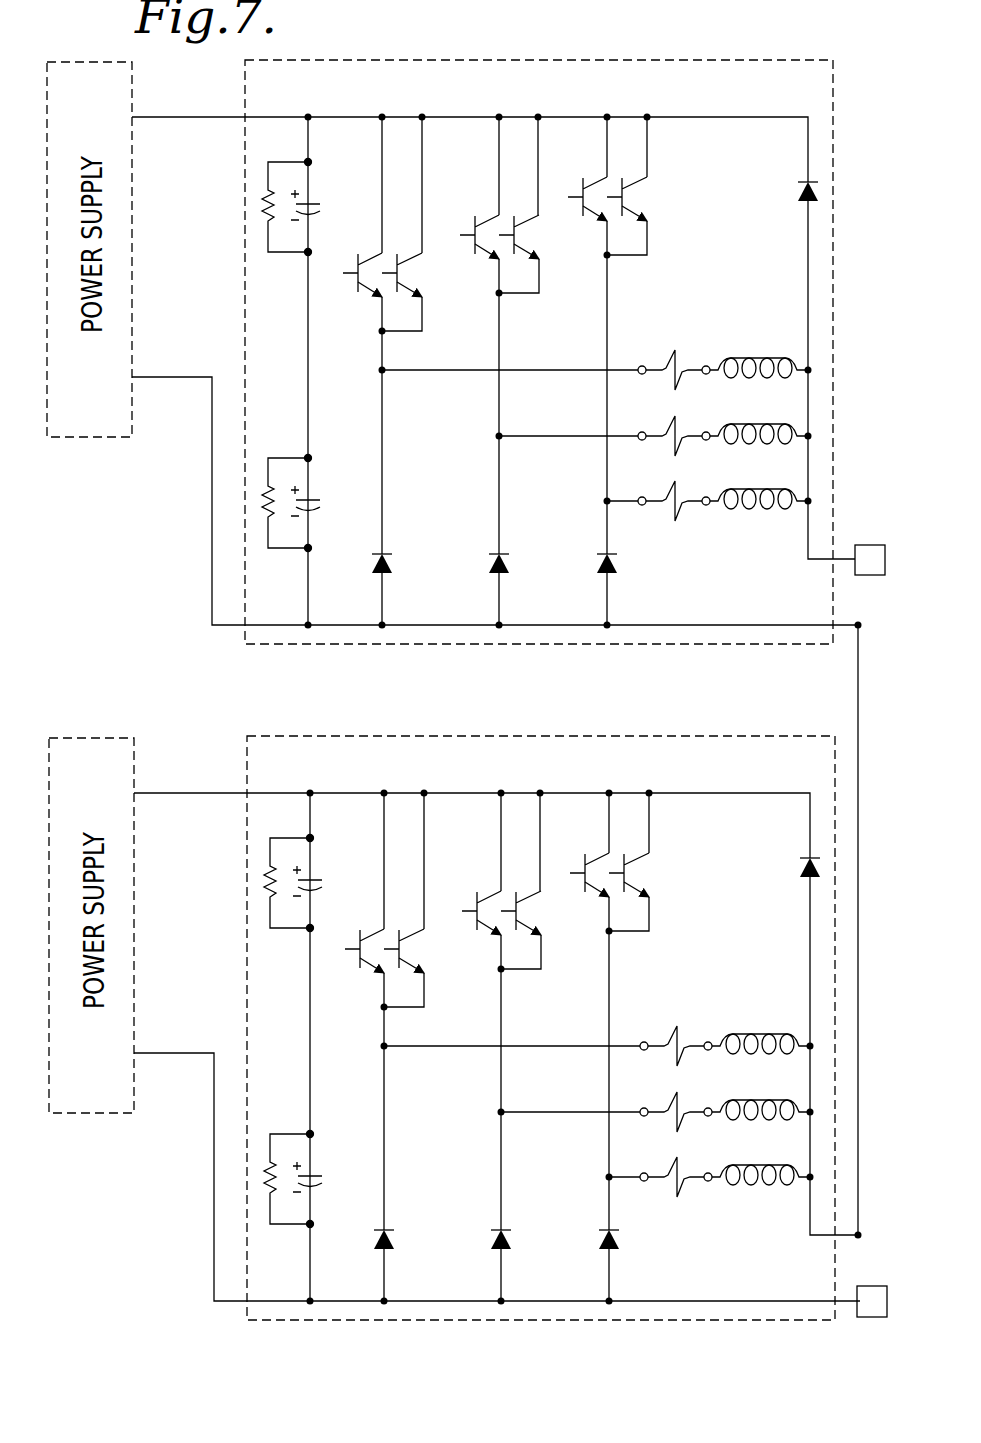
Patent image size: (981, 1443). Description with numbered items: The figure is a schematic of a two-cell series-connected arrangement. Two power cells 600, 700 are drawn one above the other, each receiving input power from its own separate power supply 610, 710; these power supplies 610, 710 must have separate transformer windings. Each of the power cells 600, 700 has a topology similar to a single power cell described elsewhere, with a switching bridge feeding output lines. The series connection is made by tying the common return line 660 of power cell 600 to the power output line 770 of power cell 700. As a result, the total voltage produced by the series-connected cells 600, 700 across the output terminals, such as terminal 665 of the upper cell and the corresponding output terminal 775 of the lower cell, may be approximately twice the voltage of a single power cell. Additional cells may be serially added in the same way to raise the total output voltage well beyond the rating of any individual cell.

The power cell 600 is at (605, 58).
The power supply 610 is at (95, 437).
The common return line 660 is at (858, 625).
The terminal 665 is at (858, 569).
The power cell 700 is at (541, 737).
The power supply 710 is at (78, 740).
The power output line 770 is at (858, 1235).
The second inverter output terminal 775 is at (868, 1287).